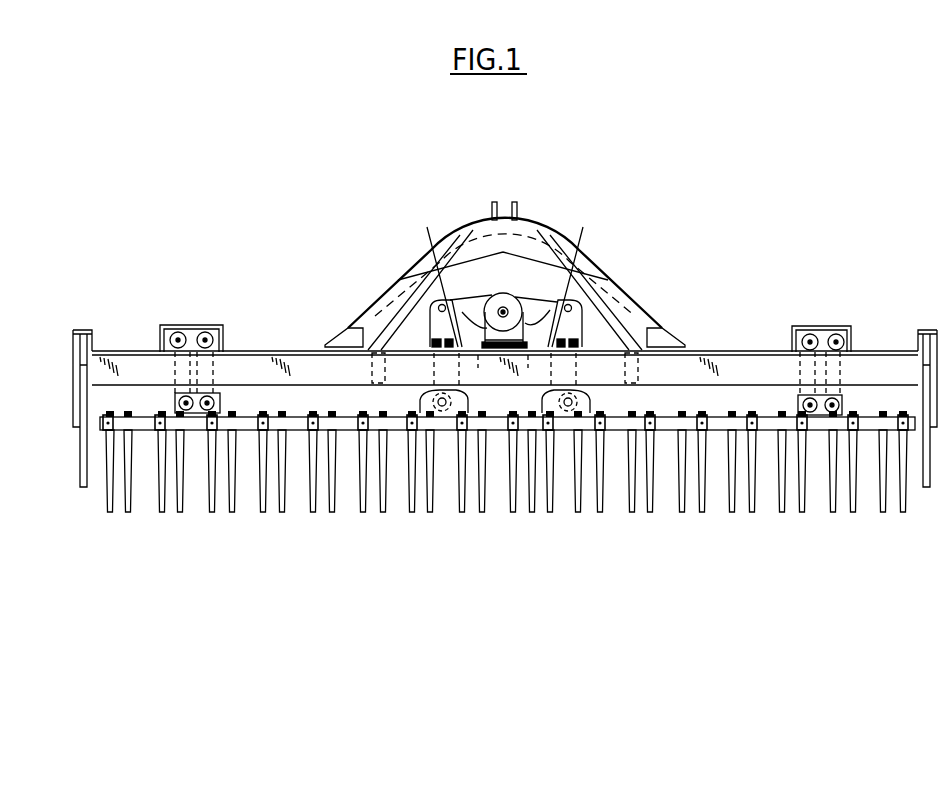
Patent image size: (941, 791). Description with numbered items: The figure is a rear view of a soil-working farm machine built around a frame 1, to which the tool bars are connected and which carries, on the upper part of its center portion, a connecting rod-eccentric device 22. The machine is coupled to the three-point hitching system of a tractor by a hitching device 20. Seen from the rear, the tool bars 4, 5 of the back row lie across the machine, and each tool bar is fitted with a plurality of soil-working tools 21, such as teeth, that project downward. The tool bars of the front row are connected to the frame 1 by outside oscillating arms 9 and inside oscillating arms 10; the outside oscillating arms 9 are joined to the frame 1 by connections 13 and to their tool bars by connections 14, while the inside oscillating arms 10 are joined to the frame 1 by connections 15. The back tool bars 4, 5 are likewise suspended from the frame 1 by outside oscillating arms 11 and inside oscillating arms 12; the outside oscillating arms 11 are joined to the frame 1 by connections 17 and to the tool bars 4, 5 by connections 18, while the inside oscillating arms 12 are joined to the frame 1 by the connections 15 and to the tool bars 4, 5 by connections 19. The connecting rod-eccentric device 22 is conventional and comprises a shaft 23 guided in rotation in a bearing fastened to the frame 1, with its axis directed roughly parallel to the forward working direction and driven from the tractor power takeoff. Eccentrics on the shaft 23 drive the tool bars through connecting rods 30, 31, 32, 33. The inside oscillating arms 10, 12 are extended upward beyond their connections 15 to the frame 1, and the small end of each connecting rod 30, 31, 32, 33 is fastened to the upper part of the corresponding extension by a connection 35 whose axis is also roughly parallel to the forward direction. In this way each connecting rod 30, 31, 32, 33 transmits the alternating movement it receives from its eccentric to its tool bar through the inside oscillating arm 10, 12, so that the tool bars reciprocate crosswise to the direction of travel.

The frame 1 is at (724, 340).
The tool bar 4 is at (716, 440).
The tool bar 5 is at (350, 440).
The outside oscillating arm 9 is at (173, 373).
The inside oscillating arm 10 is at (388, 290).
The outside oscillating arm 11 is at (215, 373).
The inside oscillating arm 12 is at (505, 272).
The connection 13 is at (177, 332).
The connection 14 is at (184, 403).
The connection 15 is at (443, 348).
The connection 17 is at (206, 332).
The connection 18 is at (209, 403).
The connection 19 is at (540, 406).
The hitching device 20 is at (507, 201).
The soil-working tools 21 is at (110, 513).
The connecting rod-eccentric device 22 is at (497, 266).
The shaft 23 is at (504, 310).
The connecting rod 30 is at (581, 315).
The connecting rod 31 is at (478, 297).
The connecting rod 32 is at (531, 297).
The connecting rod 33 is at (428, 315).
The connection 35 is at (437, 302).